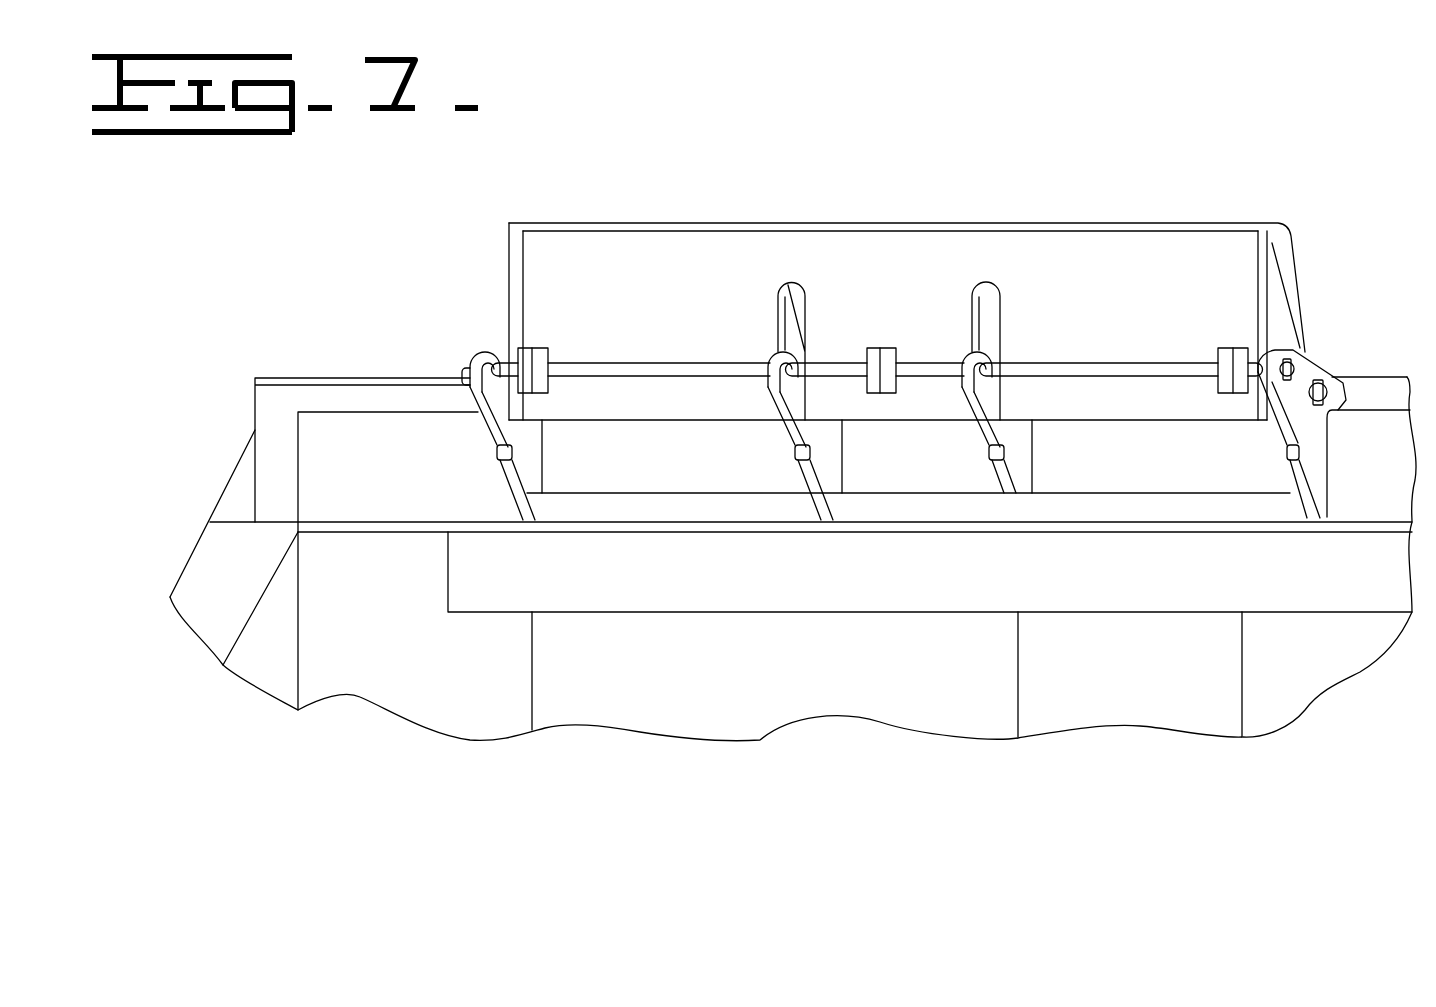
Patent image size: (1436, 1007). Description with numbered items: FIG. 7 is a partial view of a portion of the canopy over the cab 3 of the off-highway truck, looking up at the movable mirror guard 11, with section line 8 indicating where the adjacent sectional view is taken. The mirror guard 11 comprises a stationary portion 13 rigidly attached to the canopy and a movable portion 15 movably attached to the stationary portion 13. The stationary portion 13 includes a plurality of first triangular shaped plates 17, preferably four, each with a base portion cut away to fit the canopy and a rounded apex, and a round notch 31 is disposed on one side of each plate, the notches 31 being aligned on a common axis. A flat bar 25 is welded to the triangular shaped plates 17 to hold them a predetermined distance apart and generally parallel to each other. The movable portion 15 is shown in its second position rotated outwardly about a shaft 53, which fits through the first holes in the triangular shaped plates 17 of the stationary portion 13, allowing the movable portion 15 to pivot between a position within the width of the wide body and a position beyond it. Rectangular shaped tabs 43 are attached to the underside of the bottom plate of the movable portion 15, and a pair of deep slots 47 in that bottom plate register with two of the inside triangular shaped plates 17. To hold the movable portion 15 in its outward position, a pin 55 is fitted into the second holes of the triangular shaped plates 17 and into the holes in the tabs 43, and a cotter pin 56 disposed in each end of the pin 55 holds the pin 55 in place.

The cab 3 is at (353, 448).
The section line 8- 8 is at (462, 190).
The mirror guard 11 is at (685, 243).
The stationary portion 13 is at (912, 478).
The movable portion 15 is at (1052, 223).
The first triangular shaped plate 17 is at (528, 433).
The flat bar 25 is at (707, 510).
The round notch 31 is at (493, 457).
The rectangular shaped tab 43 is at (537, 347).
The deep slot 47 is at (810, 300).
The shaft 53 is at (1332, 390).
The pin 55 is at (703, 373).
The cotter pin 56 is at (1291, 377).